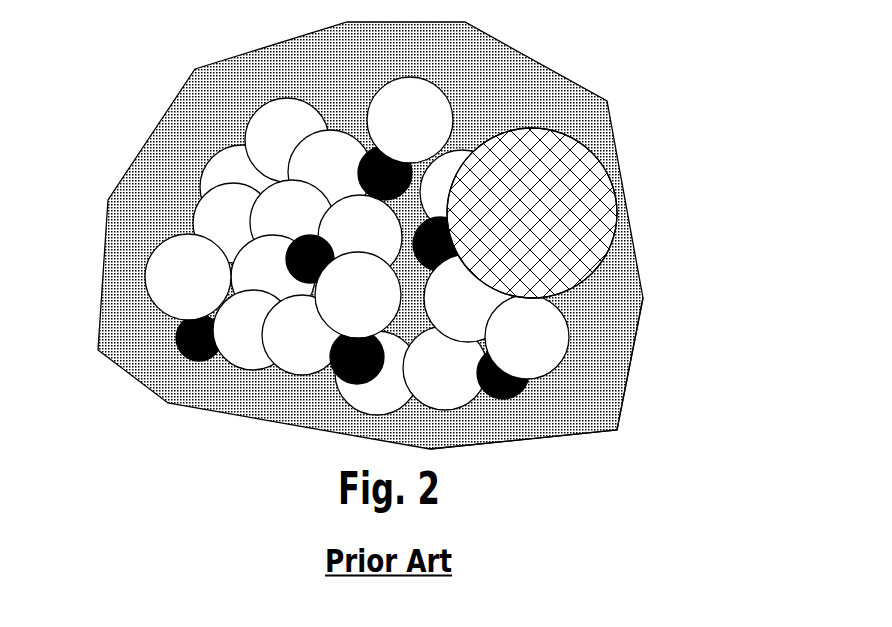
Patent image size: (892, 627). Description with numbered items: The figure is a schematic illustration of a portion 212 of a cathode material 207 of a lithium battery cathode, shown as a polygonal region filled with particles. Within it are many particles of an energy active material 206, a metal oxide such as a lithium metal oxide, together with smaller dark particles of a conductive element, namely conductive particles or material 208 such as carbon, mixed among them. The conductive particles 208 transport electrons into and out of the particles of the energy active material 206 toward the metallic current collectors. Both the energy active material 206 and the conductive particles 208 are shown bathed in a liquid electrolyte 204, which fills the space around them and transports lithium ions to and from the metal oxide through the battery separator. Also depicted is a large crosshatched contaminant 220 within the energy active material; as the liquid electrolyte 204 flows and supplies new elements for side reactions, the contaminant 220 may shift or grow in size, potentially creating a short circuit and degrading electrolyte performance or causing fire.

The liquid electrolyte 204 is at (545, 100).
The energy active material 206 is at (412, 100).
The cathode material 207 is at (598, 352).
The conductive particles or material 208 is at (313, 138).
The portion of cathode material 212 is at (390, 228).
The contaminant 220 is at (555, 172).